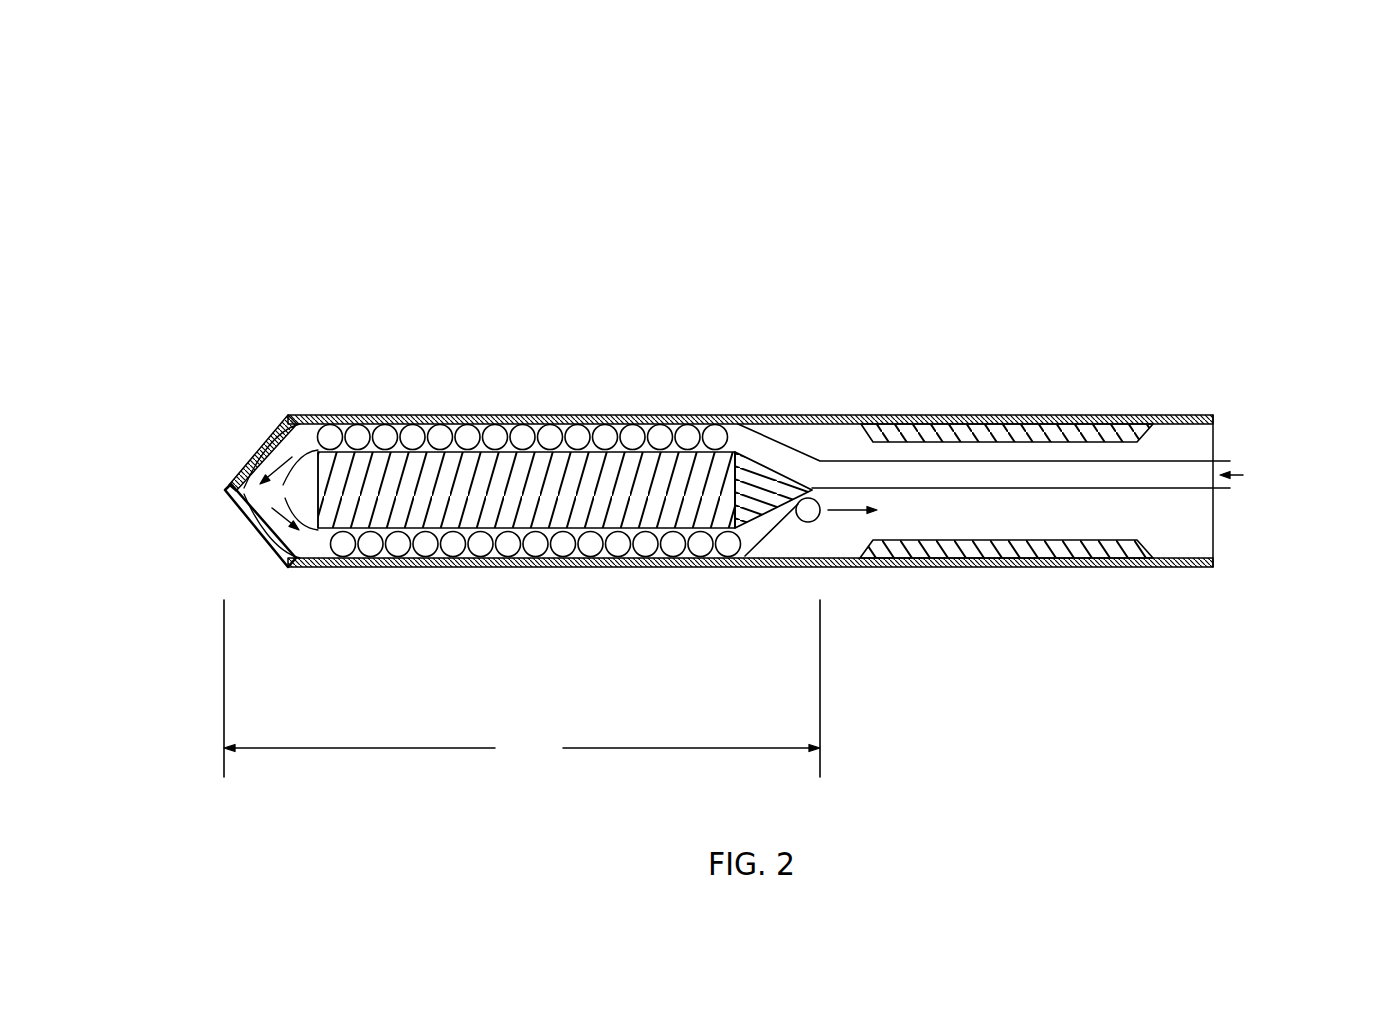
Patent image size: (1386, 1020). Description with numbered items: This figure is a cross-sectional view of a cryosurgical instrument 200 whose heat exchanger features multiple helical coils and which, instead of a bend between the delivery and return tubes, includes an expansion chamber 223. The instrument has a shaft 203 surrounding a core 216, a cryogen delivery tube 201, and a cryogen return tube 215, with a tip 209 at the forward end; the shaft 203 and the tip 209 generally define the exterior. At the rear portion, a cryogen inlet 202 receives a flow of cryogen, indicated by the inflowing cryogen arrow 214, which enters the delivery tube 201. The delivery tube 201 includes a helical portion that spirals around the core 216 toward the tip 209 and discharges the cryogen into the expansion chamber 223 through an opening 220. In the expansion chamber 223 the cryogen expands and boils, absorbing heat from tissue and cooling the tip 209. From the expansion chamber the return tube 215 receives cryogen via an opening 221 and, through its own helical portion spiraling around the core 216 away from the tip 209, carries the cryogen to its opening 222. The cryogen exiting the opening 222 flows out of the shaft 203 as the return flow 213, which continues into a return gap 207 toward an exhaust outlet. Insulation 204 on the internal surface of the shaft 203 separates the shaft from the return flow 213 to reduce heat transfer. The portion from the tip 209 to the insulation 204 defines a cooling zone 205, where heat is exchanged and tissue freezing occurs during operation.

The cryosurgical instrument 200 is at (483, 175).
The cryogen delivery tube 201 is at (717, 440).
The cryogen inlet 202 is at (1193, 472).
The shaft 203 is at (1063, 422).
The insulation 204 is at (972, 432).
The cooling zone 205 is at (522, 688).
The return gap 207 is at (1092, 513).
The tip 209 is at (229, 494).
The return flow 213 is at (848, 518).
The inflowing cryogen arrow 214 is at (1271, 476).
The cryogen return tube 215 is at (730, 548).
The core 216 is at (628, 465).
The opening 220 is at (293, 442).
The opening 221 is at (320, 545).
The opening 222 is at (808, 522).
The expansion chamber 223 is at (232, 486).